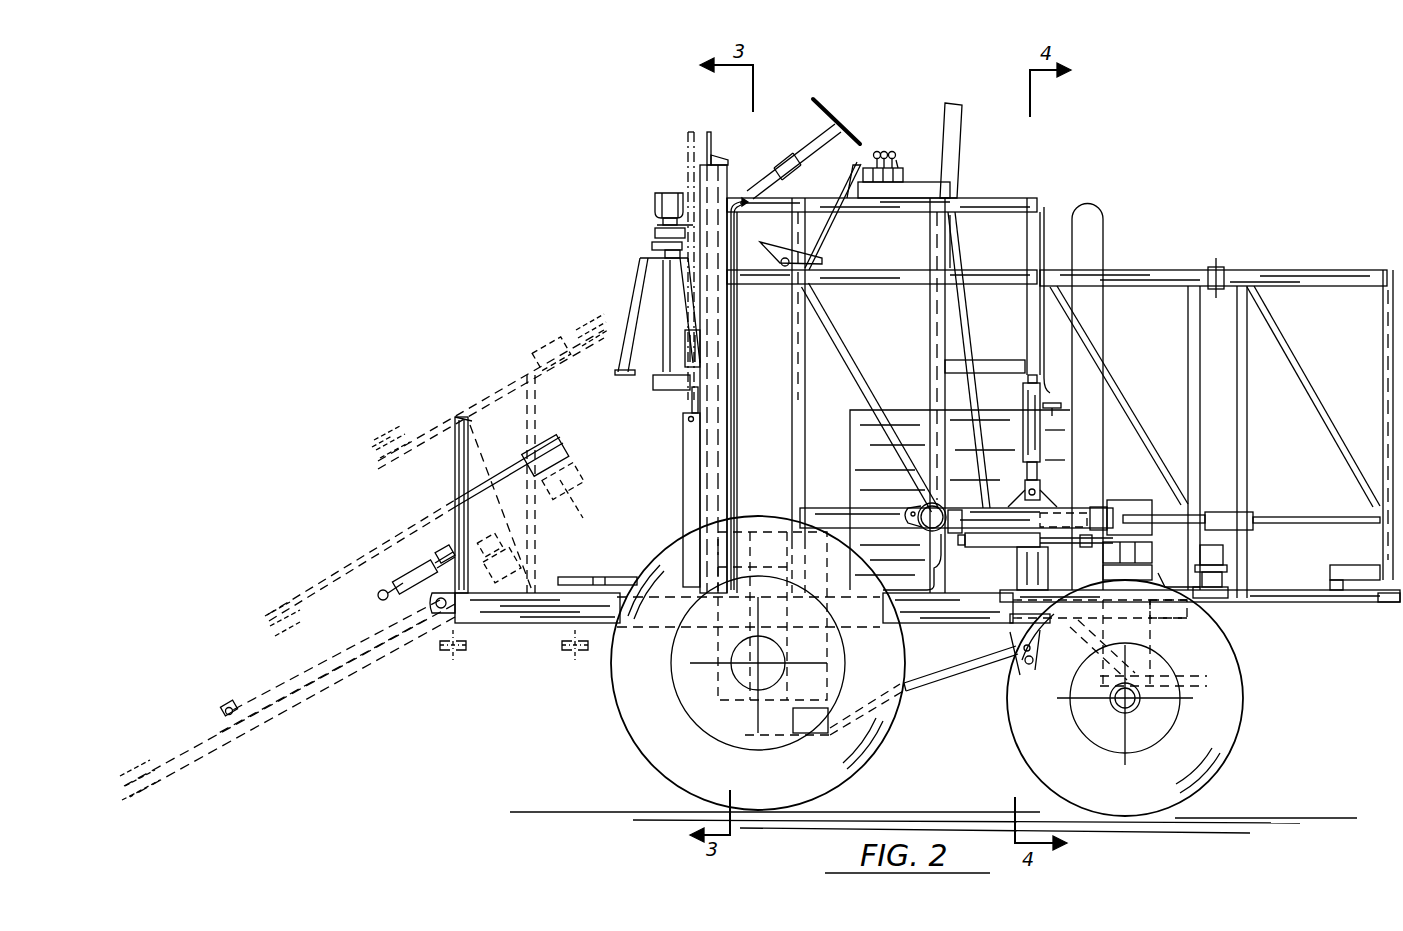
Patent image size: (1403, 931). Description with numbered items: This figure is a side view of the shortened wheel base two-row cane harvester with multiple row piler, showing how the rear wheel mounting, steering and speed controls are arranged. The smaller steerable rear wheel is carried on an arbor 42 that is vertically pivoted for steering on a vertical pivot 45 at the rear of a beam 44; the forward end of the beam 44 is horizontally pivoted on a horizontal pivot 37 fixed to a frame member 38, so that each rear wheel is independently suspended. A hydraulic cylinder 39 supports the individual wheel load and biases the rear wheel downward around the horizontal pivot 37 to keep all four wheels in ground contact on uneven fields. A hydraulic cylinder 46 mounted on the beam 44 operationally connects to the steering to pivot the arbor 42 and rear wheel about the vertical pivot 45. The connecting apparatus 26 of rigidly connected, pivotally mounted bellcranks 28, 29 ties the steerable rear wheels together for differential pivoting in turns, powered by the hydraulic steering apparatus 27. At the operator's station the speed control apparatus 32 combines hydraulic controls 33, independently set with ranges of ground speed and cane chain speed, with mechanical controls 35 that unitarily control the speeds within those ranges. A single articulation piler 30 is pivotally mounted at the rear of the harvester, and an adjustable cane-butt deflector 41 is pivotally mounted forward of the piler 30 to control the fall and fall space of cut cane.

The connecting apparatus 26 is at (1002, 336).
The hydraulic steering apparatus 27 is at (734, 346).
The bellcrank 28 is at (953, 245).
The bellcrank 29 is at (963, 517).
The single articulation piler 30 is at (863, 391).
The speed control apparatus 32 is at (875, 150).
The hydraulic controls 33 is at (903, 180).
The mechanical controls 35 is at (845, 257).
The horizontal pivot 37 is at (930, 526).
The frame member 38 is at (930, 327).
The hydraulic cylinder 39 is at (1040, 443).
The cane-butt deflector 41 is at (1207, 676).
The arbor 42 is at (1058, 463).
The beam 44 is at (1080, 507).
The vertical pivot 45 is at (1140, 546).
The hydraulic cylinder 46 is at (1000, 548).